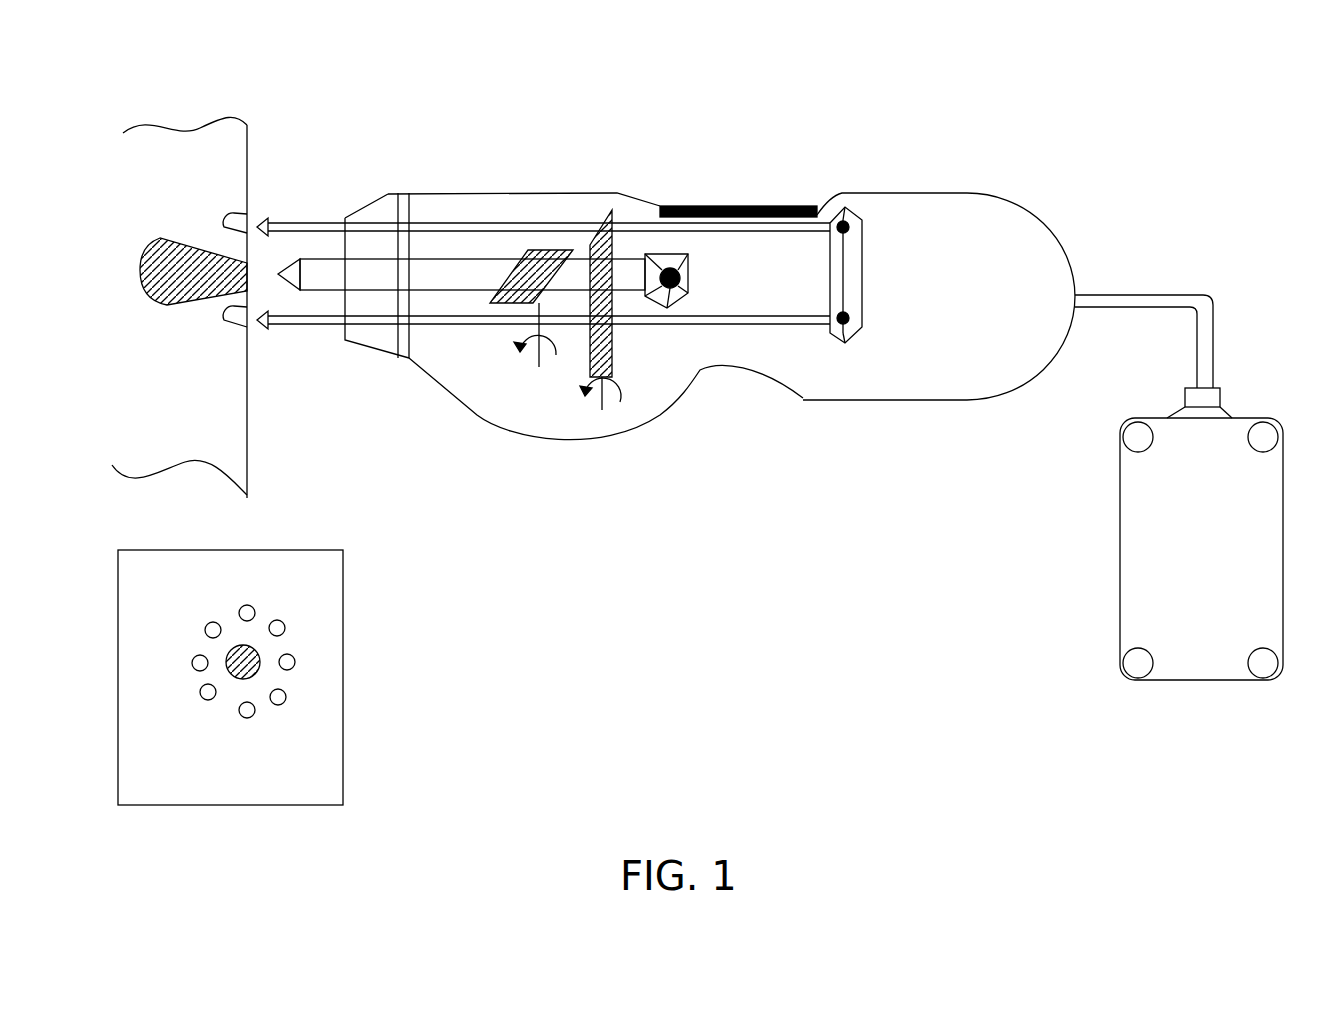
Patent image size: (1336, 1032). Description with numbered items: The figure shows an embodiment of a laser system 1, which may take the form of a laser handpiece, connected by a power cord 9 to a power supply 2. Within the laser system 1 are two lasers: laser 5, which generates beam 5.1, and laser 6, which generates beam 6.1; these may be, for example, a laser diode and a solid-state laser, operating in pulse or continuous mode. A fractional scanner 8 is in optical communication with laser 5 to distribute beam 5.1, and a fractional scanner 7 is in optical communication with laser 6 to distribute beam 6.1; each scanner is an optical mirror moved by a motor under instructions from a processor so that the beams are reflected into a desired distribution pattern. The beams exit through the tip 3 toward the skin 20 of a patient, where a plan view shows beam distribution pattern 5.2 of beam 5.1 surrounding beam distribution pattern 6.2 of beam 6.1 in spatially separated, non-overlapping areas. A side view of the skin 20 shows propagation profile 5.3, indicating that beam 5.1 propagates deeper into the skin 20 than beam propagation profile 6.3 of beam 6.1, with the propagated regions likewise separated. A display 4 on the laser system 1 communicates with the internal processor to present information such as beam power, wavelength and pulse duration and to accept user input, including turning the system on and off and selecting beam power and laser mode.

The laser system 1 is at (1017, 250).
The power supply 2 is at (1180, 523).
The tip 3 is at (390, 193).
The display 4 is at (745, 205).
The laser 5 is at (850, 305).
The beam from laser 5 5.1 is at (307, 228).
The beam distribution pattern of beam 5.1 5.2 is at (290, 657).
The propagation profile of beam 5.1 5.3 is at (227, 215).
The laser 6 is at (668, 298).
The beam of laser 6 6.1 is at (452, 273).
The beam distribution pattern of beam 6.1 6.2 is at (235, 677).
The beam propagation profile of beam 6.1 6.3 is at (142, 297).
The fractional scanner for laser 6 7 is at (522, 305).
The fractional scanner for laser 5 8 is at (610, 357).
The power cord 9 is at (1210, 290).
The skin 20 is at (162, 587).